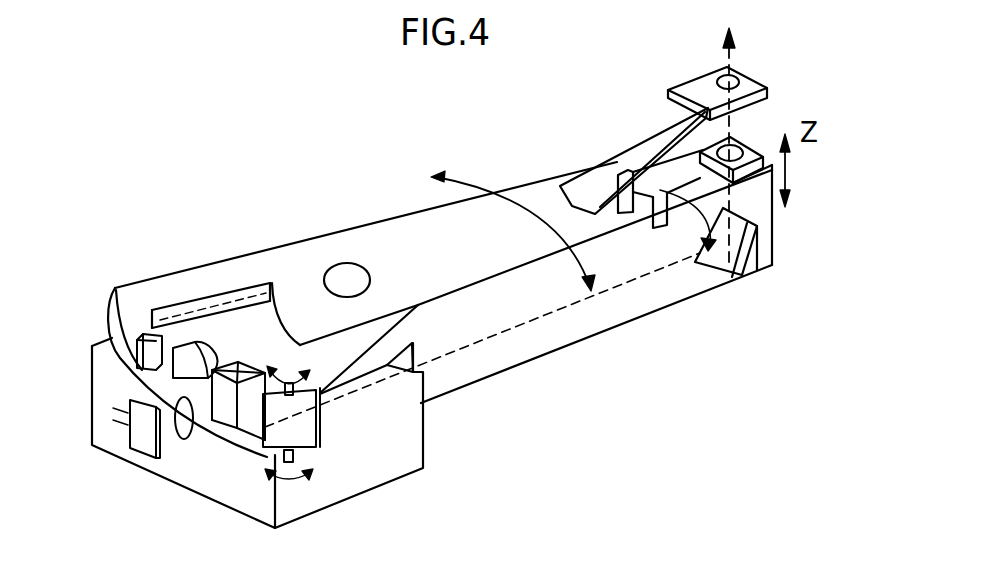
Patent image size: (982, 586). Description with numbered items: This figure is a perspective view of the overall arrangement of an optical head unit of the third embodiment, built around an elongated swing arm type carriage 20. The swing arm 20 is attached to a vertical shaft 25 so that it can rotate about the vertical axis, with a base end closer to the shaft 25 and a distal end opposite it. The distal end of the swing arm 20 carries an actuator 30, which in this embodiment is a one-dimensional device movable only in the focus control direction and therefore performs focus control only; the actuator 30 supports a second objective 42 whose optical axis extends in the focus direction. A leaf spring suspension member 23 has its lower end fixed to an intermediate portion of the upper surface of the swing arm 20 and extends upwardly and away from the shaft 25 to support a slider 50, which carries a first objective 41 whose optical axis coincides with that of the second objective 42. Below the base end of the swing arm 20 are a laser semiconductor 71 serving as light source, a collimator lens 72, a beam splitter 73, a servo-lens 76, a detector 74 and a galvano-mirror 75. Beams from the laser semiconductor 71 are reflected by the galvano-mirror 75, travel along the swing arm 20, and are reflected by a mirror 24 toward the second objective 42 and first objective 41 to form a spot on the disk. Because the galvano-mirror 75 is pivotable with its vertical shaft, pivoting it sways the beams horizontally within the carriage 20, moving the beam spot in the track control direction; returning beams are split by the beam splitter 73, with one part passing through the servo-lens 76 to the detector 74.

The swing arm 20 is at (420, 208).
The leaf spring suspension member 23 is at (610, 158).
The mirror 24 is at (728, 264).
The vertical shaft 25 is at (355, 268).
The actuator 30 is at (768, 163).
The first objective 41 is at (717, 72).
The second objective 42 is at (740, 140).
The slider 50 is at (740, 85).
The laser semiconductor 71 is at (148, 337).
The collimator lens 72 is at (193, 345).
The beam splitter 73 is at (243, 428).
The detector 74 is at (130, 434).
The galvano-mirror 75 is at (307, 447).
The servo-lens 76 is at (198, 432).